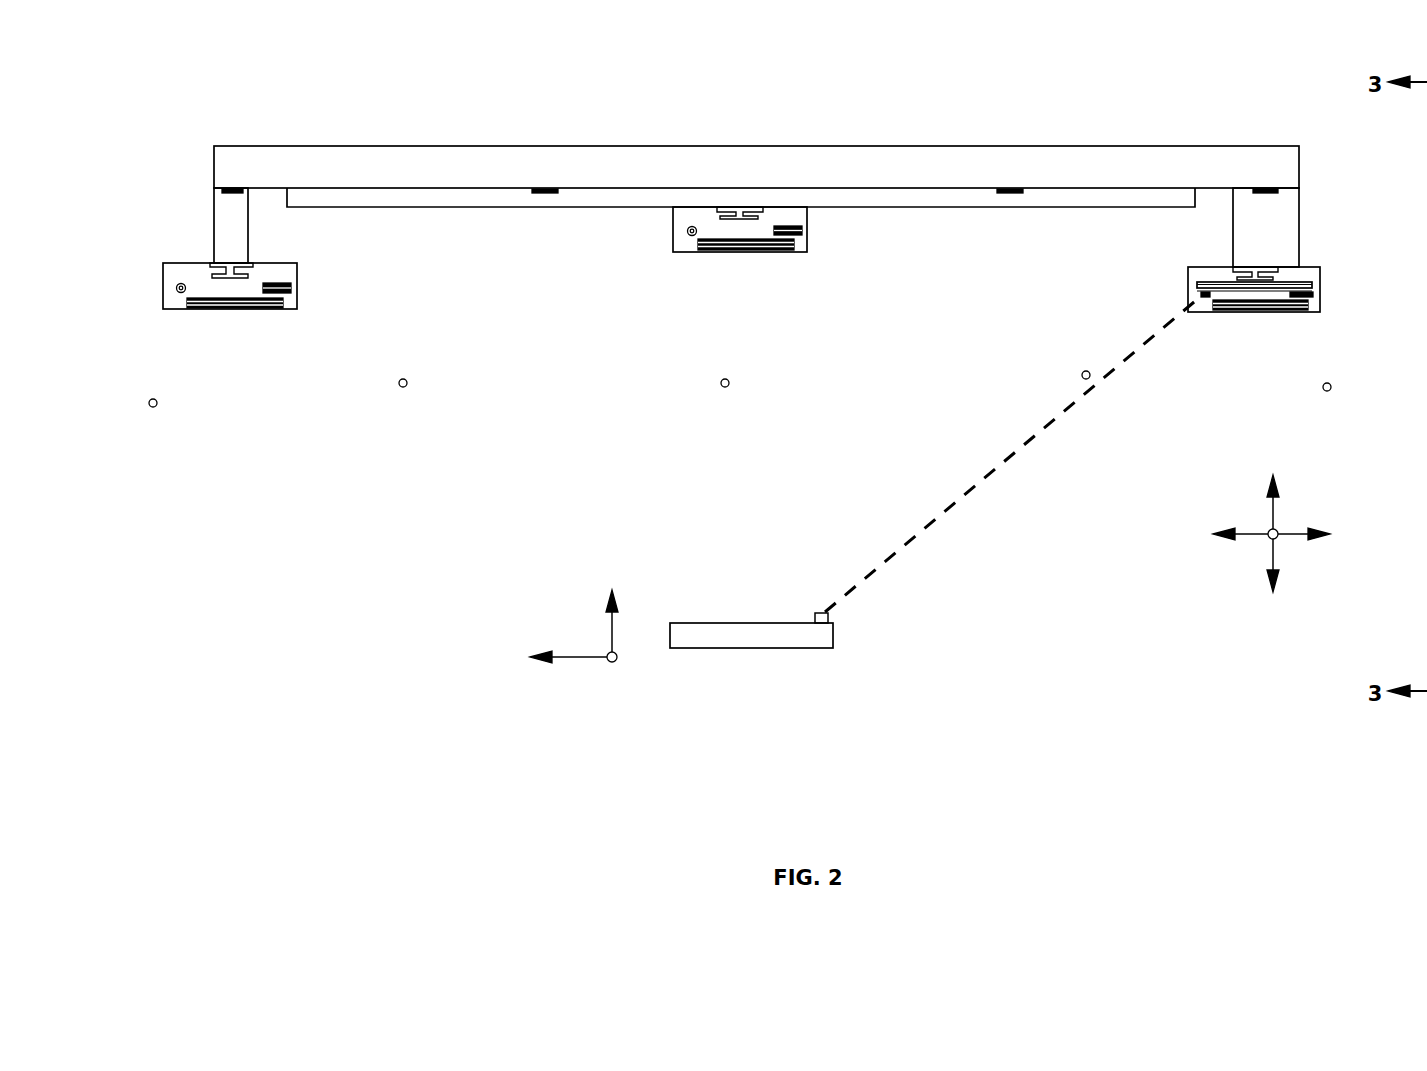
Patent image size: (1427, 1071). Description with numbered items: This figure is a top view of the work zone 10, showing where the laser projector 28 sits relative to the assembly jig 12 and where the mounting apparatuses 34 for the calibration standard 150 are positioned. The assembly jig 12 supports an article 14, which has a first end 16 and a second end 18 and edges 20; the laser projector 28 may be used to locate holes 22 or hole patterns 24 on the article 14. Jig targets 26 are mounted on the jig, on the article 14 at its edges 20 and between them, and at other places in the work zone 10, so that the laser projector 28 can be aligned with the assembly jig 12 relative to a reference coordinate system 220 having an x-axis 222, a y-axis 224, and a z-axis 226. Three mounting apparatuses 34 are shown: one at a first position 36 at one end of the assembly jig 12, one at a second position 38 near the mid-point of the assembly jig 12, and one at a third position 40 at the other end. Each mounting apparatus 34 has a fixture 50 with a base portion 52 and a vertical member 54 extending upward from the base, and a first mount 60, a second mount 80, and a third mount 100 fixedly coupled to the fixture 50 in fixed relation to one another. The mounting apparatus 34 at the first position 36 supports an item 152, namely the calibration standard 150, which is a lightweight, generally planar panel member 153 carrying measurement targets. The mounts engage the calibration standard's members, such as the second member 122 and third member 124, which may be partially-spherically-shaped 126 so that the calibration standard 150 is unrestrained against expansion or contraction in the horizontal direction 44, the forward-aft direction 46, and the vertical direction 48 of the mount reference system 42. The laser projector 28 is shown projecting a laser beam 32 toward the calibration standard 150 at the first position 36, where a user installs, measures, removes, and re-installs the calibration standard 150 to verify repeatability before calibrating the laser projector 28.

The work zone 10 is at (305, 582).
The assembly jig 12 is at (333, 145).
The article 14 is at (417, 198).
The first end 16 is at (1182, 196).
The second end 18 is at (297, 198).
The edges 20 is at (282, 198).
The holes 22 is at (953, 207).
The hole patterns 24 is at (905, 207).
The jig targets 26 is at (230, 193).
The laser projector 28 is at (752, 641).
The laser beam 32 is at (918, 534).
The mounting apparatus 34 is at (297, 306).
The first position 36 is at (1320, 311).
The second position 38 is at (793, 252).
The third position 40 is at (282, 309).
The mount reference system 42 is at (1277, 538).
The horizontal direction 44 is at (1288, 533).
The forward-aft direction 46 is at (1268, 556).
The vertical direction 48 is at (1280, 530).
The fixture 50 is at (297, 270).
The base portion 52 is at (163, 272).
The vertical member 54 is at (210, 262).
The first mount 60 is at (176, 290).
The second mount 80 is at (292, 288).
The third mount 100 is at (247, 262).
The second member 122 is at (1200, 296).
The third member 124 is at (1294, 311).
The partially-spherically-shaped 126 is at (1256, 311).
The calibration standard 150 is at (1227, 311).
The item 152 is at (1222, 282).
The panel member 153 is at (1233, 283).
The reference coordinate system 220 is at (612, 656).
The x-axis 222 is at (605, 622).
The y-axis 224 is at (580, 660).
The z-axis 226 is at (618, 664).